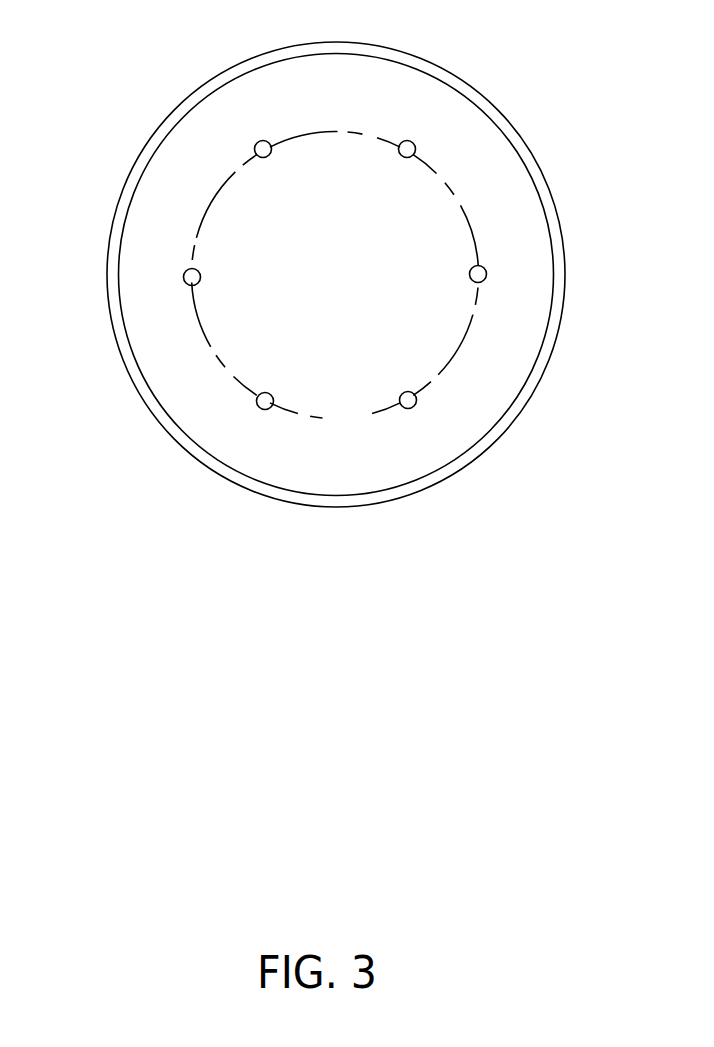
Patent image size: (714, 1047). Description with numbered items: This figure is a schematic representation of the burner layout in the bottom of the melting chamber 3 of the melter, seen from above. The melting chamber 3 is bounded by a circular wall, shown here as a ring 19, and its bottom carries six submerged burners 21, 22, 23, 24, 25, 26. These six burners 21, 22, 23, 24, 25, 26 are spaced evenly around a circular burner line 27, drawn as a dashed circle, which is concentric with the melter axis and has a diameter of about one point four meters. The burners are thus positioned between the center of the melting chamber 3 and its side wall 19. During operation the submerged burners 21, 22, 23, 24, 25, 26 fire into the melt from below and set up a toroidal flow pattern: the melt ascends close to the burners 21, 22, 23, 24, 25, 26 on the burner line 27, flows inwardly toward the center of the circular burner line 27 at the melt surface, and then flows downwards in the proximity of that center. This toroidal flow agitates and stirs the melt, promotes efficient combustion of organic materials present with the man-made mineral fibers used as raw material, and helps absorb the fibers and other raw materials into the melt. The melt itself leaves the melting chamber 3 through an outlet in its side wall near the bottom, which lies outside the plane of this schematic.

The melting chamber 3 is at (130, 486).
The outer ring / plate body 19 is at (546, 177).
The submerged burner 21 is at (185, 281).
The submerged burner 22 is at (258, 142).
The submerged burner 23 is at (413, 142).
The submerged burner 24 is at (486, 272).
The submerged burner 25 is at (416, 404).
The submerged burner 26 is at (266, 410).
The circular burner line 27 is at (470, 326).